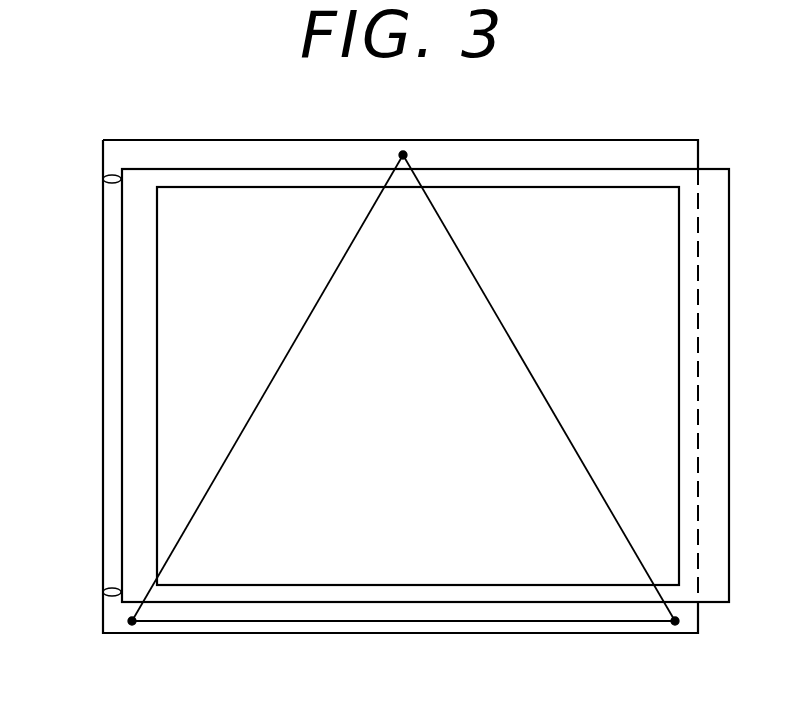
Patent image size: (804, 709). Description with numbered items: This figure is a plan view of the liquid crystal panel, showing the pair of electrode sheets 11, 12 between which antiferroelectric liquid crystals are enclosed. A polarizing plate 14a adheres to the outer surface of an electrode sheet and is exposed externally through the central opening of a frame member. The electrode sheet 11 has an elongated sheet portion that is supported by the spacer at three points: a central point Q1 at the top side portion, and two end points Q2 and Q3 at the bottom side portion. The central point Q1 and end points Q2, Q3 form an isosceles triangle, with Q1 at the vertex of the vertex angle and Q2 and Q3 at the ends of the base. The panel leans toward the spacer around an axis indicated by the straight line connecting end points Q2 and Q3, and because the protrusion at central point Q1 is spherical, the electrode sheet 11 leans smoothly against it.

The electrode sheet 11 is at (260, 155).
The electrode sheet 12 is at (137, 341).
The polarizing plate 14a is at (528, 558).
The central point Q1 is at (405, 150).
The end point Q2 is at (130, 627).
The end point Q3 is at (670, 628).